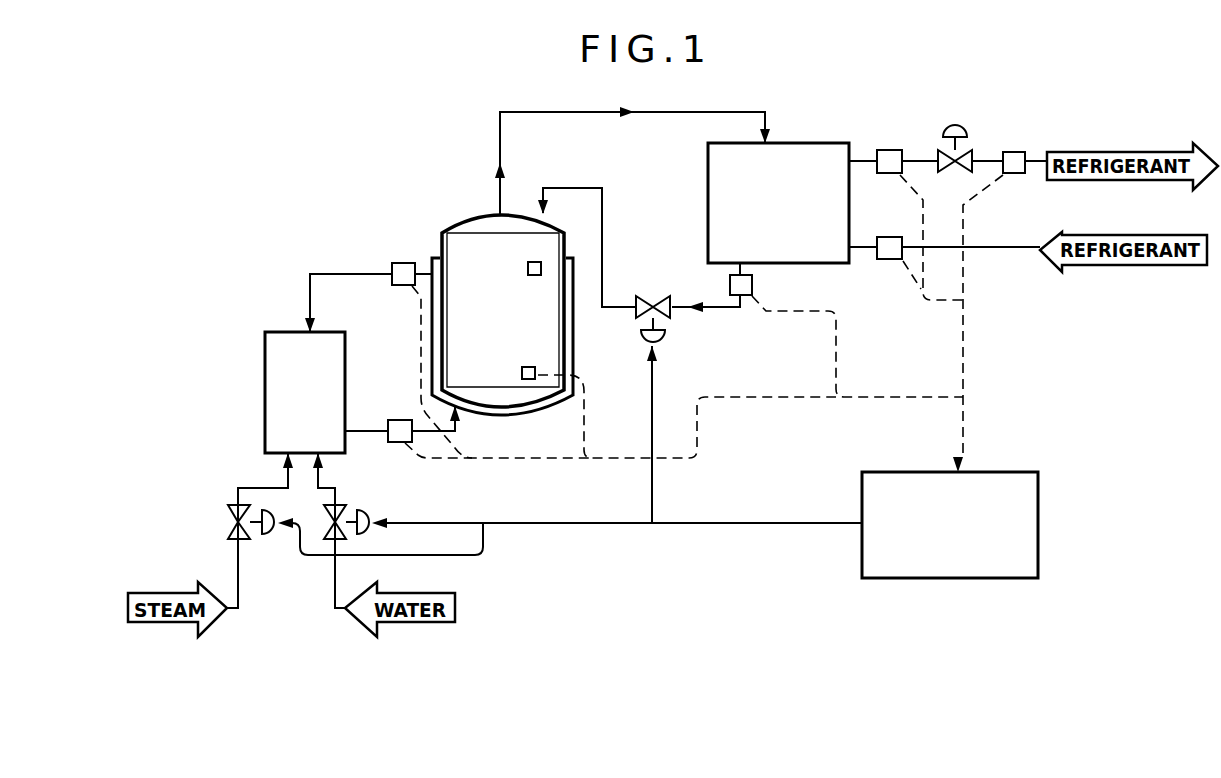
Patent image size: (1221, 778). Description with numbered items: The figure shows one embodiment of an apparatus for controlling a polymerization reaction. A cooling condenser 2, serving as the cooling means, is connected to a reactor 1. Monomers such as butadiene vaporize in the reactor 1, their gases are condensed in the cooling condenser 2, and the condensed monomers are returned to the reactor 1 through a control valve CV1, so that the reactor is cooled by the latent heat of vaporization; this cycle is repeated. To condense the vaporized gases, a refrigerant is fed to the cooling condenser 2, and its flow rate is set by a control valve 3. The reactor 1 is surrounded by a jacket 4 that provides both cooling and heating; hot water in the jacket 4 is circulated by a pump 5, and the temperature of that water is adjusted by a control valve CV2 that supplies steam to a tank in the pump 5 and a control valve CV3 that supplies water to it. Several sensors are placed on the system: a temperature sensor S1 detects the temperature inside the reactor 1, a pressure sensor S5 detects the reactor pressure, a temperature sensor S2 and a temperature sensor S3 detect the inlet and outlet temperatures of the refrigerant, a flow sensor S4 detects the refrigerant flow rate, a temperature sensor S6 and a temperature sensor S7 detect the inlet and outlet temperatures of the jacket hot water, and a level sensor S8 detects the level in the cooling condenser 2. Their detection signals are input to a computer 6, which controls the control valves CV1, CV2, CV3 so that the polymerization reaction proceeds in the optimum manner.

The reactor 1 is at (472, 215).
The cooling condenser 2 is at (791, 143).
The control valve 3 is at (957, 131).
The jacket 4 is at (433, 259).
The pump 5 is at (265, 353).
The computer 6 is at (1013, 472).
The temperature sensor S1 is at (537, 380).
The temperature sensor S2 is at (890, 259).
The temperature sensor S3 is at (1014, 152).
The flow sensor S4 is at (890, 150).
The pressure sensor S5 is at (541, 268).
The temperature sensor S6 is at (400, 420).
The temperature sensor S7 is at (394, 263).
The level sensor S8 is at (740, 296).
The control valve CV1 is at (650, 293).
The control valve CV2 is at (230, 515).
The control valve CV3 is at (365, 513).